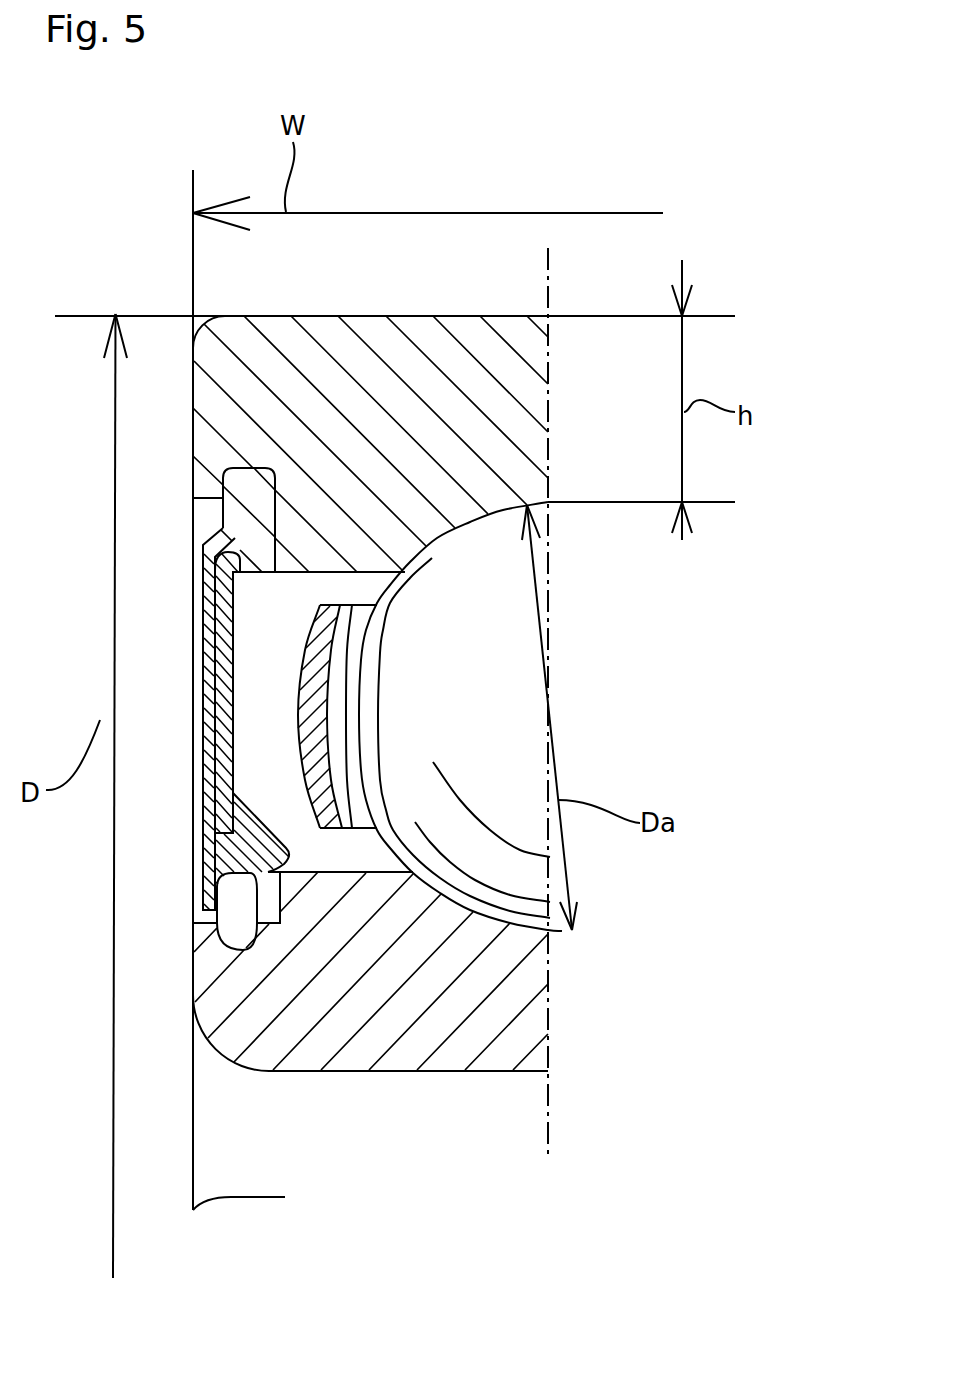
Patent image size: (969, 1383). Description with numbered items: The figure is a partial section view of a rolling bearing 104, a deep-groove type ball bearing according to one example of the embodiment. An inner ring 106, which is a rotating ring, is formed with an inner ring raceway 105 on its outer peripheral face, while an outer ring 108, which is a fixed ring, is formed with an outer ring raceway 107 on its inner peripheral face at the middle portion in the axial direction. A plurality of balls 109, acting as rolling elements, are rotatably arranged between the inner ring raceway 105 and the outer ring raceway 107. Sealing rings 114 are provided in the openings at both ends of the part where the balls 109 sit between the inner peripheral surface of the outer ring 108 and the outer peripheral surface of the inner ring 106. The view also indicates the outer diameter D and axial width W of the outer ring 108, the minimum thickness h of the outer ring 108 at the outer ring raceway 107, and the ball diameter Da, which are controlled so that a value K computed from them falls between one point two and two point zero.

The rolling bearing 104 is at (155, 287).
The inner ring raceway 105 is at (473, 903).
The inner ring 106 is at (478, 1035).
The outer ring raceway 107 is at (502, 506).
The outer ring 108 is at (318, 365).
The balls 109 is at (485, 692).
The sealing rings 114 is at (215, 705).